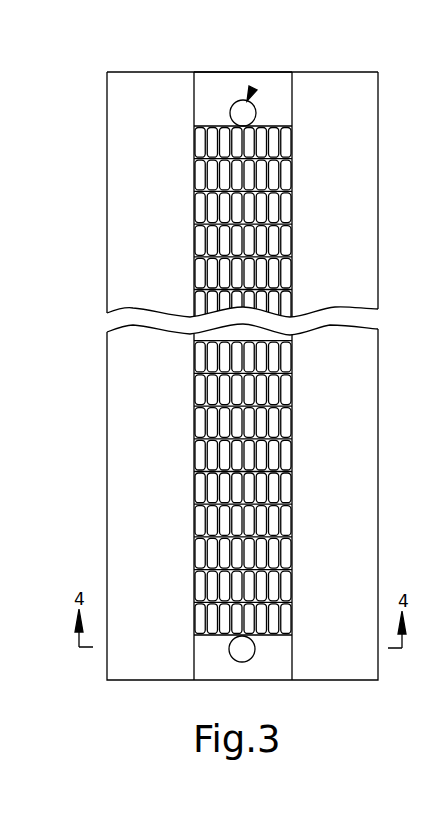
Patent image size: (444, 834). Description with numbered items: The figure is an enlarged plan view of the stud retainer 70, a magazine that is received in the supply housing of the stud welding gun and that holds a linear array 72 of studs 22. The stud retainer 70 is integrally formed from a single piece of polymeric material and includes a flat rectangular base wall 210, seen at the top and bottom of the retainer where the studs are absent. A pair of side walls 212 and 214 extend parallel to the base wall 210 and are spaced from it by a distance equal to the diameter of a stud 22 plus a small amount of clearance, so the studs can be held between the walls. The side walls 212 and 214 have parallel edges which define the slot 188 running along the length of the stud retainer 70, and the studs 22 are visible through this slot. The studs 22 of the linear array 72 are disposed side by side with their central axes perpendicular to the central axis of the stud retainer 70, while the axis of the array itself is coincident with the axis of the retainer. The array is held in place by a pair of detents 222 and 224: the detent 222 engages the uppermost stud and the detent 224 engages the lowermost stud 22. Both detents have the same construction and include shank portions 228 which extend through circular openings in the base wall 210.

The stud 22 is at (268, 137).
The stud retainer 70 is at (383, 207).
The linear array 72 is at (292, 331).
The slot 188 is at (194, 522).
The base wall 210 is at (218, 92).
The side wall 212 is at (127, 656).
The side wall 214 is at (335, 670).
The detent 222 is at (252, 90).
The detent 224 is at (233, 653).
The shank portion 228 is at (240, 115).